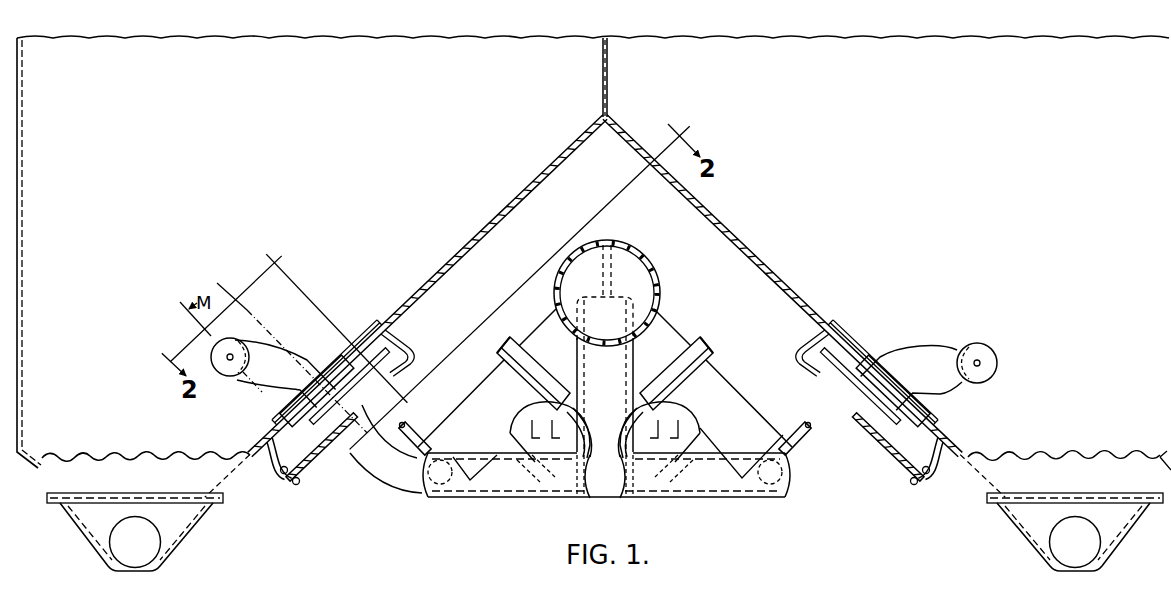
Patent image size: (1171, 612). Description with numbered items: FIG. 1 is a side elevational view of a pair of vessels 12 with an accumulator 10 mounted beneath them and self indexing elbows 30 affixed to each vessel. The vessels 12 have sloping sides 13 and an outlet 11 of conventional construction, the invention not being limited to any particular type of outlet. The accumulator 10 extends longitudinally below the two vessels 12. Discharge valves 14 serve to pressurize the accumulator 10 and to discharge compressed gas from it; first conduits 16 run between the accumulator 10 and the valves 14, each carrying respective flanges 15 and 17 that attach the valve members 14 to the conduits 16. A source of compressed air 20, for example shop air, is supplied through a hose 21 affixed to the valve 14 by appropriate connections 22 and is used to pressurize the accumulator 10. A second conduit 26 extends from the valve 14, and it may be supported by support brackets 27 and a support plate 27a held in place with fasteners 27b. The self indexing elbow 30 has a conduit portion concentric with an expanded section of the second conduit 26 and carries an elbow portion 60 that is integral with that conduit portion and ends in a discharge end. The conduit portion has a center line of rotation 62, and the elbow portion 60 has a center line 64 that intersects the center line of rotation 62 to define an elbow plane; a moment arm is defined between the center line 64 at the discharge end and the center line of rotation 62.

The accumulator 10 is at (639, 242).
The outlet 11 is at (192, 539).
The vessels 12 is at (238, 203).
The sloping sides 13 is at (490, 222).
The discharge valves 14 is at (467, 395).
The flange 15 is at (496, 352).
The first conduits 16 is at (546, 317).
The flange 17 is at (510, 336).
The source of compressed air 20 is at (404, 422).
The hose 21 is at (393, 442).
The connections 22 is at (421, 498).
The second conduit 26 is at (373, 453).
The support brackets 27 is at (280, 462).
The support plate 27a is at (320, 456).
The fasteners 27b is at (294, 485).
The self indexing elbow 30 is at (289, 342).
The elbow portion 60 is at (235, 378).
The center line of rotation 62 is at (219, 281).
The elbow center line 64 is at (228, 355).